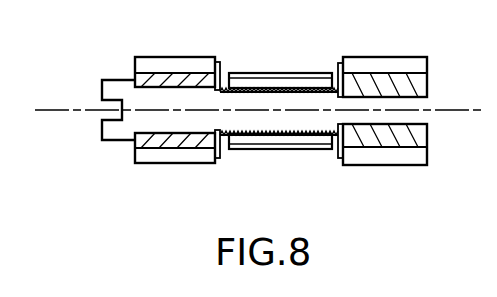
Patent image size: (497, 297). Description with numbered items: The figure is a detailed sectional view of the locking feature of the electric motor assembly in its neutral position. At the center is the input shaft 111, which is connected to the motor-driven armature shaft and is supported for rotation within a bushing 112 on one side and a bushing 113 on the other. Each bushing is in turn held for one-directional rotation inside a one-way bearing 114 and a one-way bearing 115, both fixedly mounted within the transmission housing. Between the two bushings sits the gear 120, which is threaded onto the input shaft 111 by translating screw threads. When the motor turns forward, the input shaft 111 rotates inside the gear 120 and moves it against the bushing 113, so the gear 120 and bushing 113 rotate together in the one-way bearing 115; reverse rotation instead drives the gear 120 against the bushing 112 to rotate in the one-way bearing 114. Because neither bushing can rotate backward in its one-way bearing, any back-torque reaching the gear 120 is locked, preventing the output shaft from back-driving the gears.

The input shaft 111 is at (113, 86).
The bushing 112 is at (137, 143).
The bushing 113 is at (410, 138).
The one-way bearing 114 is at (153, 157).
The one-way bearing 115 is at (378, 160).
The gear 120 is at (257, 140).